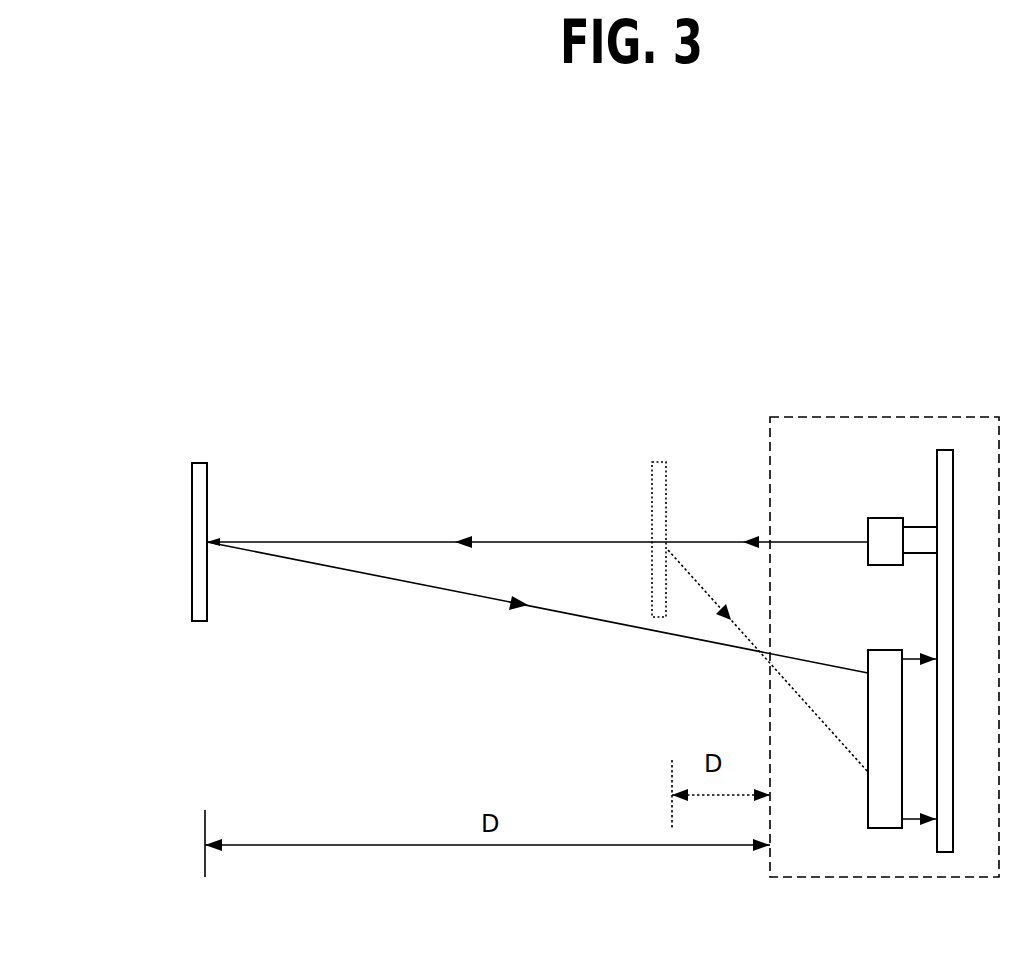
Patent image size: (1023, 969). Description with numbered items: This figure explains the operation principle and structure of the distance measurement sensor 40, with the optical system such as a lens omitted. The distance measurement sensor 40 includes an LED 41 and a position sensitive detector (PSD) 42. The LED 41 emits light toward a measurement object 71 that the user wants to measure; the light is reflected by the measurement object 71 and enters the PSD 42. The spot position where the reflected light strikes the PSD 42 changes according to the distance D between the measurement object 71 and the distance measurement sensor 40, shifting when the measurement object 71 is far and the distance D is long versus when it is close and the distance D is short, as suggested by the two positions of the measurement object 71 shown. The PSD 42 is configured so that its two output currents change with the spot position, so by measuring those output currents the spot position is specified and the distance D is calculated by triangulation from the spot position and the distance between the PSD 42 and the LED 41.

The measurement object 71 is at (195, 462).
The distance measurement sensor 40 is at (877, 417).
The LED 41 is at (876, 518).
The position sensitive detector (PSD) 42 is at (870, 650).